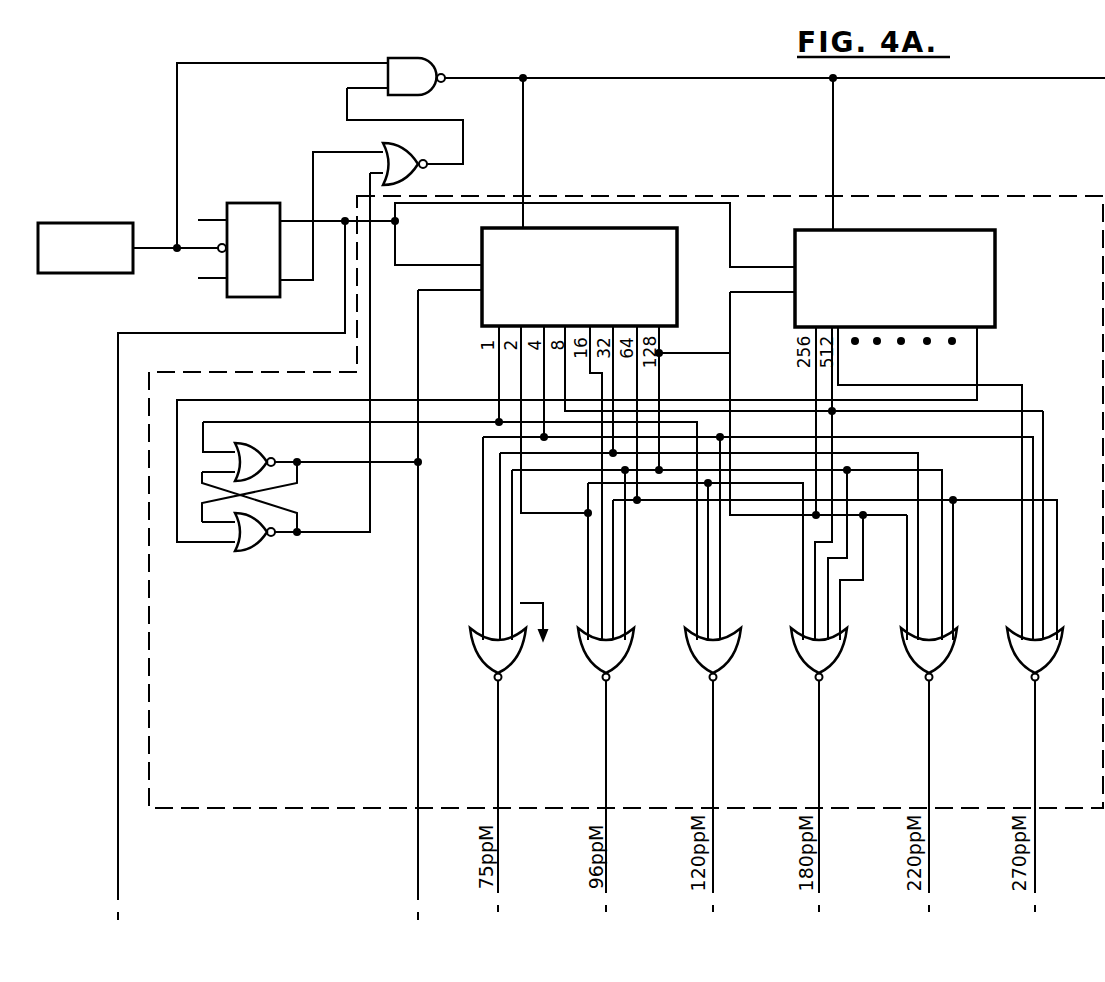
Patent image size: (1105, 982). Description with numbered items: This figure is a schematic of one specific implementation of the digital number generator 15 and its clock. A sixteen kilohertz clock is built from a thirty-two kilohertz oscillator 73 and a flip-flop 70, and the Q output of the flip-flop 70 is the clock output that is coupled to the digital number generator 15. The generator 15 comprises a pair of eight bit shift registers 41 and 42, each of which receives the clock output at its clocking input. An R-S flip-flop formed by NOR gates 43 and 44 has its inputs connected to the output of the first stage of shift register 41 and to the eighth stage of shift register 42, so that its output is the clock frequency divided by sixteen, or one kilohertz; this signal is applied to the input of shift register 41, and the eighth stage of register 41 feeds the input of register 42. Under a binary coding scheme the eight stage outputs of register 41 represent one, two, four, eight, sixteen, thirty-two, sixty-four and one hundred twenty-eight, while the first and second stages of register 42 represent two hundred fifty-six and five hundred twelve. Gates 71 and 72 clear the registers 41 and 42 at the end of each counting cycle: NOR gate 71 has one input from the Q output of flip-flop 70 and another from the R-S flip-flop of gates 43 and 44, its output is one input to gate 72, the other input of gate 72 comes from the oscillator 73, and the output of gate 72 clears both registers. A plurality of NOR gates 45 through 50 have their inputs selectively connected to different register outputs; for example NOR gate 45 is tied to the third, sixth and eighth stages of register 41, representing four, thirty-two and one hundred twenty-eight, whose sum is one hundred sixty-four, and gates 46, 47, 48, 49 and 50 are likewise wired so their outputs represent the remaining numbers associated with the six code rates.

The digital number generator 15 is at (286, 636).
The 8 bit shift register 41 is at (662, 281).
The 8 bit shift register 42 is at (983, 282).
The NOR gate 43 is at (250, 453).
The NOR gate 44 is at (252, 540).
The NOR gate 45 is at (502, 653).
The NOR gate 46 is at (610, 653).
The NOR gate 47 is at (717, 653).
The NOR gate 48 is at (823, 653).
The NOR gate 49 is at (933, 653).
The NOR gate 50 is at (1039, 653).
The flip-flop 70 is at (257, 205).
The NOR gate 71 is at (400, 158).
The gate 72 is at (418, 67).
The 32 kilohertz oscillator 73 is at (128, 222).